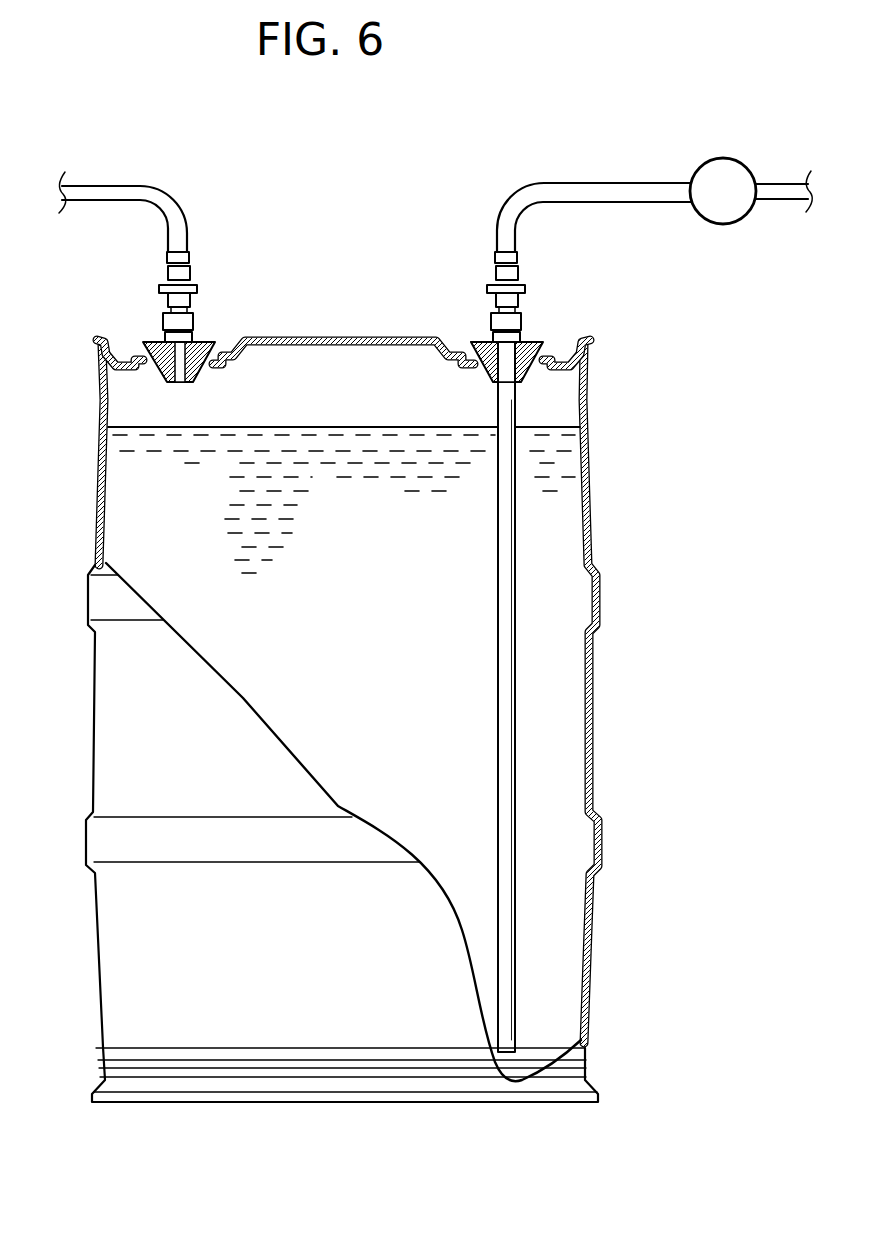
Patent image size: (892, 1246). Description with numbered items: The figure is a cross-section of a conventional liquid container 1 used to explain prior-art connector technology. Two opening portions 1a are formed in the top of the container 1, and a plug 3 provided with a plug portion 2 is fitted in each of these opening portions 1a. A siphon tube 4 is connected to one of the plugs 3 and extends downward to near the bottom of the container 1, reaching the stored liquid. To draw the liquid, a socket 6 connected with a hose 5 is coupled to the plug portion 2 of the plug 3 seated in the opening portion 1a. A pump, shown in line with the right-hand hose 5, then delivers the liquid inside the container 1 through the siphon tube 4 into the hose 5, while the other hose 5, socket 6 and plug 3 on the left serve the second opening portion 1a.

The container 1 is at (604, 676).
The opening portion 1a is at (157, 377).
The plug portion 2 is at (163, 319).
The plug 3 is at (200, 378).
The siphon tube 4 is at (500, 578).
The hose 5 is at (112, 193).
The socket 6 is at (187, 298).